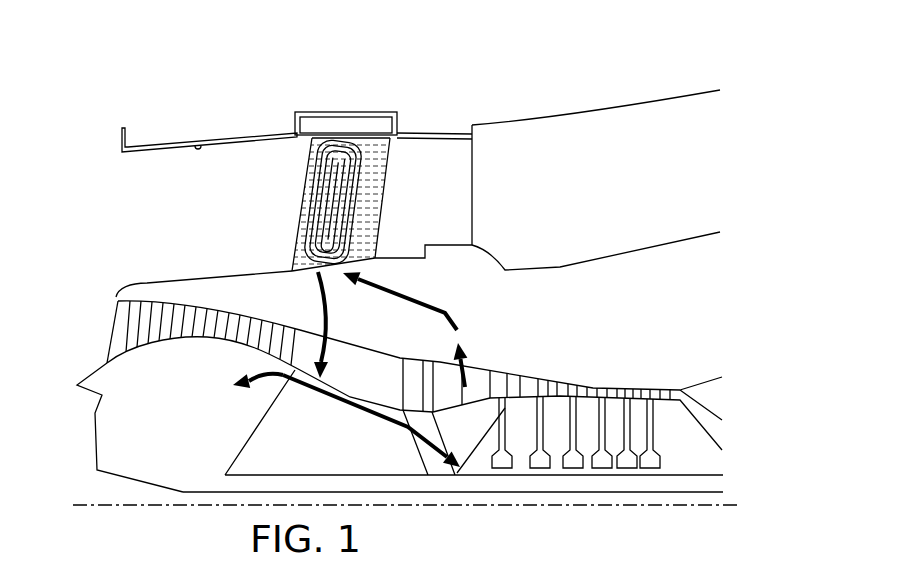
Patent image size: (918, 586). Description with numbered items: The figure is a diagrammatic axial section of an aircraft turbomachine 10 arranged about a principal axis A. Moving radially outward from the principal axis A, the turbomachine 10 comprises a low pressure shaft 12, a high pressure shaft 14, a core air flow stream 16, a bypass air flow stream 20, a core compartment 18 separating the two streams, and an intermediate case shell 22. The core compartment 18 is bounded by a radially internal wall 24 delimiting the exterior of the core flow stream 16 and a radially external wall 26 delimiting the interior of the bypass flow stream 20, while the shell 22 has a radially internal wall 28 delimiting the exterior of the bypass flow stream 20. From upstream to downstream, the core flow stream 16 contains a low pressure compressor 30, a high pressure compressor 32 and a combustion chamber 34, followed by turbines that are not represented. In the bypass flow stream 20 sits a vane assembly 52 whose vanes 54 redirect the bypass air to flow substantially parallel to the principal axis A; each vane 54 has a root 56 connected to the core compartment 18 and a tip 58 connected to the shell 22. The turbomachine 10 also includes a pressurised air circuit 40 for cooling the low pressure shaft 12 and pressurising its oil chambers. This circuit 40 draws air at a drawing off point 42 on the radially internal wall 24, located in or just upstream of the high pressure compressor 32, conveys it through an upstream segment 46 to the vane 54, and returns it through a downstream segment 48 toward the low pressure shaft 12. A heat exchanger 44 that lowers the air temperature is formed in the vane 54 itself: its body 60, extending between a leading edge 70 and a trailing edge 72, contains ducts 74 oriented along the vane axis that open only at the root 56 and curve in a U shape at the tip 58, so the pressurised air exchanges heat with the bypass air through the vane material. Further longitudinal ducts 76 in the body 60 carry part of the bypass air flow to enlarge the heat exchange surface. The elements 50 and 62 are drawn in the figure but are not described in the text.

The aircraft turbomachine 10 is at (531, 114).
The low pressure shaft 12 is at (657, 504).
The high pressure shaft 14 is at (478, 486).
The core air flow stream 16 is at (96, 325).
The core compartment 18 is at (210, 286).
The bypass air flow stream 20 is at (128, 219).
The intermediate case shell 22 is at (153, 157).
The radially internal wall 24 is at (355, 342).
The radially external wall 26 is at (177, 280).
The radially internal wall 28 is at (200, 143).
The low pressure compressor 30 is at (220, 345).
The high pressure compressor 32 is at (524, 404).
The combustion chamber 34 is at (701, 386).
The pressurised air circuit 40 is at (467, 315).
The air drawing off point 42 is at (455, 362).
The heat exchanger 44 is at (270, 213).
The upstream segment 46 is at (435, 298).
The downstream segment 48 is at (322, 292).
The heat exchanger core 50 is at (346, 232).
The vane assembly 52 is at (435, 167).
The vane 54 is at (395, 150).
The root 56 is at (360, 260).
The tip 58 is at (322, 137).
The body 60 is at (305, 162).
The inlet air flow 62 is at (356, 274).
The leading edge 70 is at (302, 187).
The trailing edge 72 is at (385, 172).
The ducts 74 is at (330, 147).
The other ducts 76 is at (368, 147).
The principal axis A is at (85, 505).